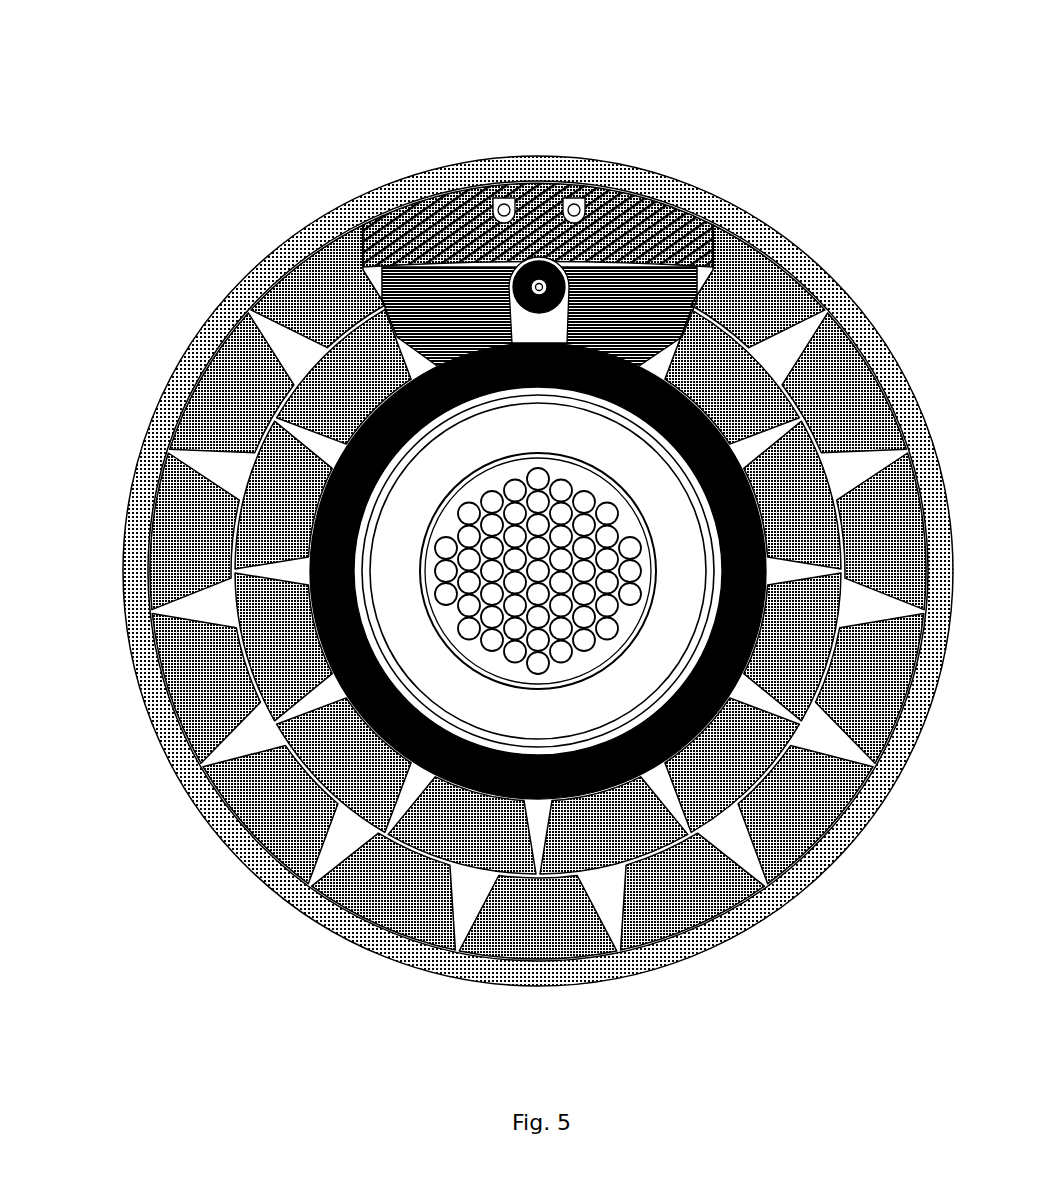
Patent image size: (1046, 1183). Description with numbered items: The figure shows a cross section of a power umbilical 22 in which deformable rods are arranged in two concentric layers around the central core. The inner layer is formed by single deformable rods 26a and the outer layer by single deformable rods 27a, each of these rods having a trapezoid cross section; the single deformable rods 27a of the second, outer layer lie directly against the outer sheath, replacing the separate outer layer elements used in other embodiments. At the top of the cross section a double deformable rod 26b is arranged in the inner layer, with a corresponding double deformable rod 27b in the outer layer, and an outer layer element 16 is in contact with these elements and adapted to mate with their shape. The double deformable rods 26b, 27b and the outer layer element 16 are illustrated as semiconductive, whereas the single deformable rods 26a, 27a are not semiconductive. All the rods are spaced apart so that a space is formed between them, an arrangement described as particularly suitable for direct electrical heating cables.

The power umbilical 22 is at (825, 165).
The double deformable rod 27b is at (368, 215).
The double deformable rod 26b is at (440, 200).
The outer layer element 16 is at (703, 218).
The single deformable rod 27a is at (240, 385).
The single deformable rod 26a is at (282, 520).